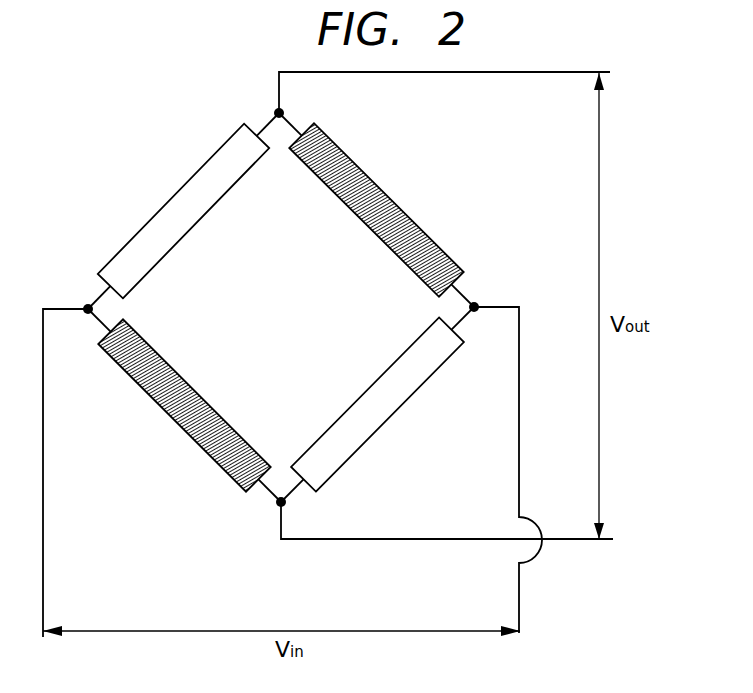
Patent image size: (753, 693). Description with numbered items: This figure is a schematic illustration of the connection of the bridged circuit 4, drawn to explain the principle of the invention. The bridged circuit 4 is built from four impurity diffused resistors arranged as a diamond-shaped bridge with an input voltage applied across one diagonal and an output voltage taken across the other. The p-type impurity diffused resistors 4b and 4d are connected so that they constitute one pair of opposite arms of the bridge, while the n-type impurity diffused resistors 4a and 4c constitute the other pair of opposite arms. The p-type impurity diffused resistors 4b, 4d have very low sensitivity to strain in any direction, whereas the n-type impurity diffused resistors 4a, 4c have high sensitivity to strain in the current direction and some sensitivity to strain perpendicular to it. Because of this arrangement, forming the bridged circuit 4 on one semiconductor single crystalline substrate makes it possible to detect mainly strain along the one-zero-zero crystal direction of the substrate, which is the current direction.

The bridged circuit 4 is at (686, 76).
The n-type impurity diffused resistor 4a is at (188, 195).
The p-type impurity diffused resistor 4b is at (395, 211).
The n-type impurity diffused resistor 4c is at (370, 432).
The p-type impurity diffused resistor 4d is at (180, 420).